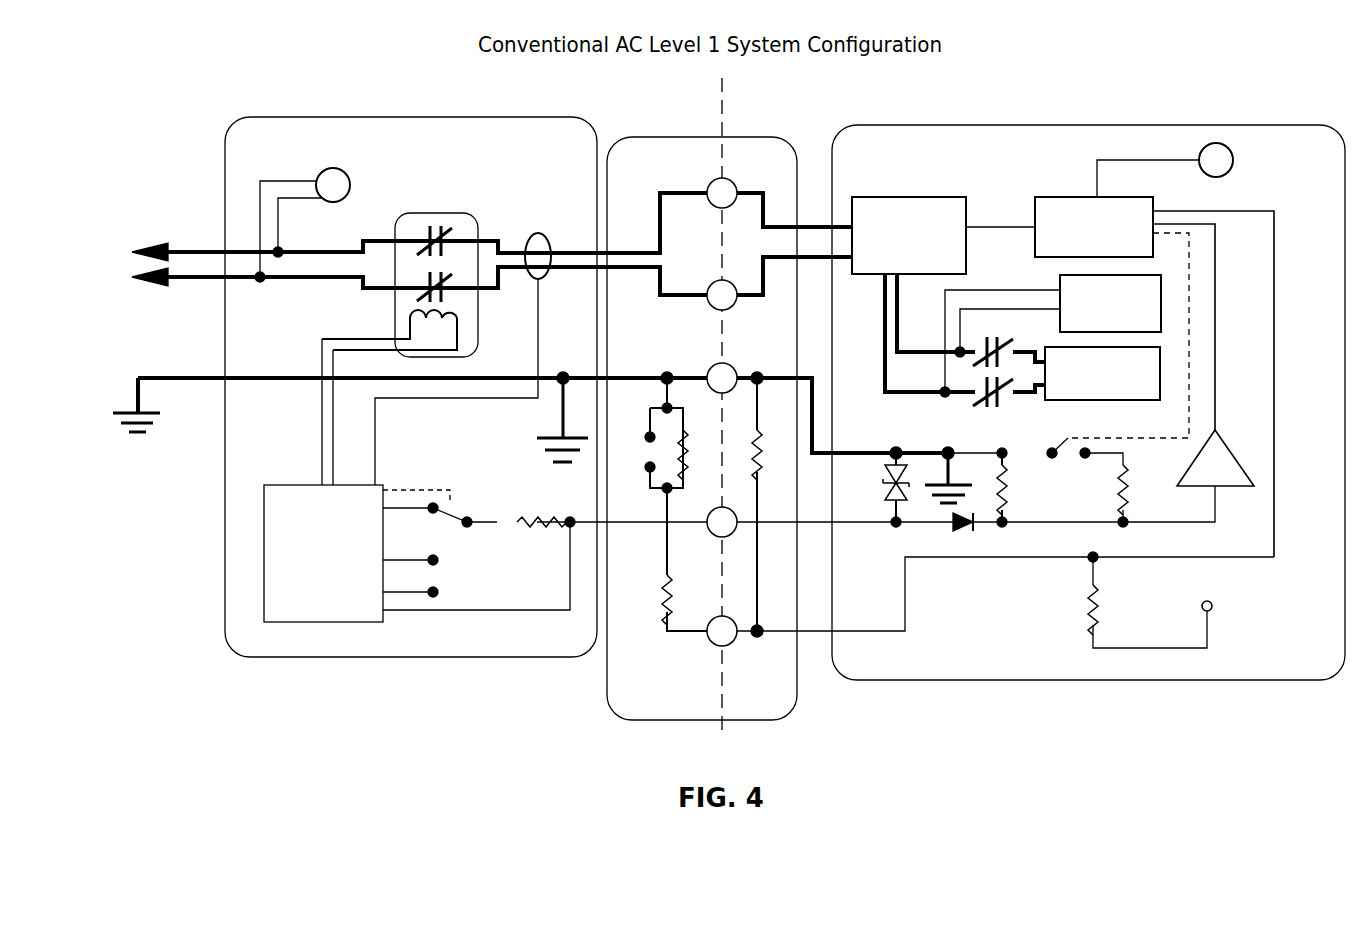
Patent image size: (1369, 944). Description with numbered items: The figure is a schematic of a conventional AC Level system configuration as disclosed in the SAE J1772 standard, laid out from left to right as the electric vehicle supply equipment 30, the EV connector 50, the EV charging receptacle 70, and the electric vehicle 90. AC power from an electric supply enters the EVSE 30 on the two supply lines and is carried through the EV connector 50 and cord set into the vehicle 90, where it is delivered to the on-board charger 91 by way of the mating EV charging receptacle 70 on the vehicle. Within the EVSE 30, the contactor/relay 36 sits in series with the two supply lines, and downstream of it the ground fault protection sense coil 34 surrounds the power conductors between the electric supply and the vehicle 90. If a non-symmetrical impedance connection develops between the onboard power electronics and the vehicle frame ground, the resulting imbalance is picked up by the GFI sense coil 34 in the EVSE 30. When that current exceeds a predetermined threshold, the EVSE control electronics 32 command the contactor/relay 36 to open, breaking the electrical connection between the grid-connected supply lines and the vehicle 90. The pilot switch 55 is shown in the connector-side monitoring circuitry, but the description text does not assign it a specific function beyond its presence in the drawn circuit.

The electric vehicle supply equipment 30 is at (530, 394).
The EVSE control electronics 32 is at (297, 622).
The ground fault protection (GFI) sense coil 34 is at (538, 233).
The contactor/relay 36 is at (395, 307).
The EV connector 50 is at (902, 414).
The pilot switch 55 is at (648, 452).
The EV charging receptacle 70 is at (786, 715).
The electric vehicle 90 is at (1041, 415).
The on-board charger 91 is at (885, 197).